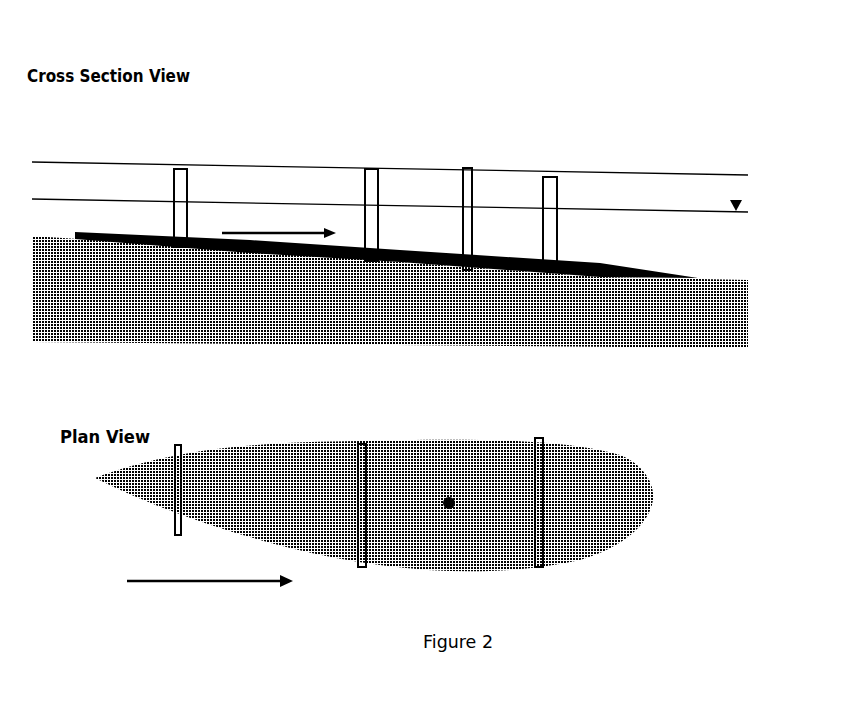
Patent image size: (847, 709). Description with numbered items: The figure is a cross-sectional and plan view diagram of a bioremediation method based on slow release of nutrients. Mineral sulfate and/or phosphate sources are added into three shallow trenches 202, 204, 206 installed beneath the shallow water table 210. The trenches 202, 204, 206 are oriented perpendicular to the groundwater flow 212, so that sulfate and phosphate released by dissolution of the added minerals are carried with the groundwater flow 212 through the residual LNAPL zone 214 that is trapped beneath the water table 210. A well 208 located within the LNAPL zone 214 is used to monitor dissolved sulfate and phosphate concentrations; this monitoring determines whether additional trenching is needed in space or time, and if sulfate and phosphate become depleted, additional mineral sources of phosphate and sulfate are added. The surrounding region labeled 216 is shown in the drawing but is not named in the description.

The shallow trench 202 is at (190, 169).
The shallow trench 204 is at (380, 169).
The shallow trench 206 is at (556, 176).
The well 208 is at (473, 168).
The water table 210 is at (596, 206).
The groundwater flow 212 is at (278, 195).
The residual LNAPL zone 214 is at (698, 277).
The sand aquifer / treated zone 216 is at (657, 247).